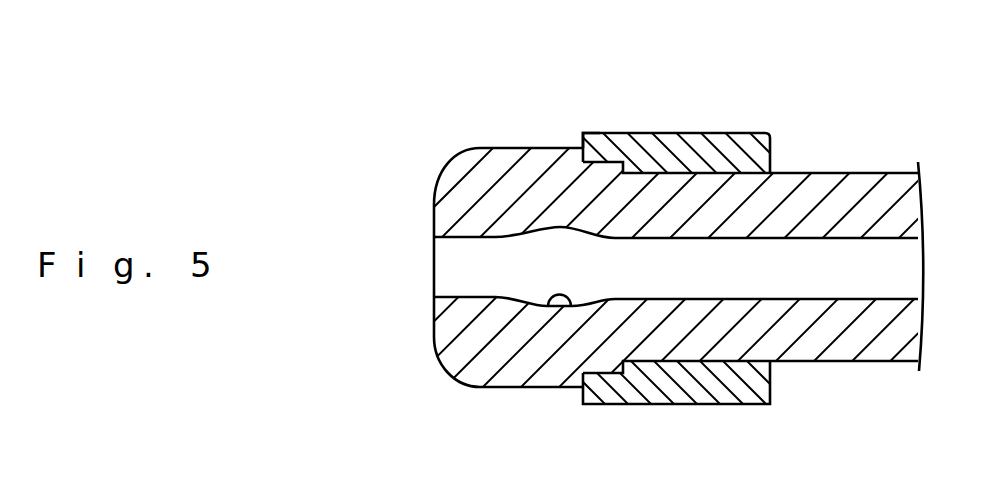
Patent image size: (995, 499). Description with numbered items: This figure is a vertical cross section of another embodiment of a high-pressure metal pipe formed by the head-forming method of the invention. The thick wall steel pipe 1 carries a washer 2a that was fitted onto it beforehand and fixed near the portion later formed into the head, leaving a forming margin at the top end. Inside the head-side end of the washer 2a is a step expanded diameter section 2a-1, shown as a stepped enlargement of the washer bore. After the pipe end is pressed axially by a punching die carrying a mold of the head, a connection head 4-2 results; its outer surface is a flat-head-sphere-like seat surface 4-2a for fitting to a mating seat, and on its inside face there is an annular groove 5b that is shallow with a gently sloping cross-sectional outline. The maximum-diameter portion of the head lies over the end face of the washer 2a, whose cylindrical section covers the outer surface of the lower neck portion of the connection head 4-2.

The thick wall steel pipe 1 is at (833, 207).
The washer 2a is at (694, 145).
The step expanded diameter section 2a-1 is at (573, 139).
The connection head 4-2 is at (508, 188).
The flat-head-sphere-like seat surface 4-2a is at (455, 158).
The annular groove 5b is at (548, 288).